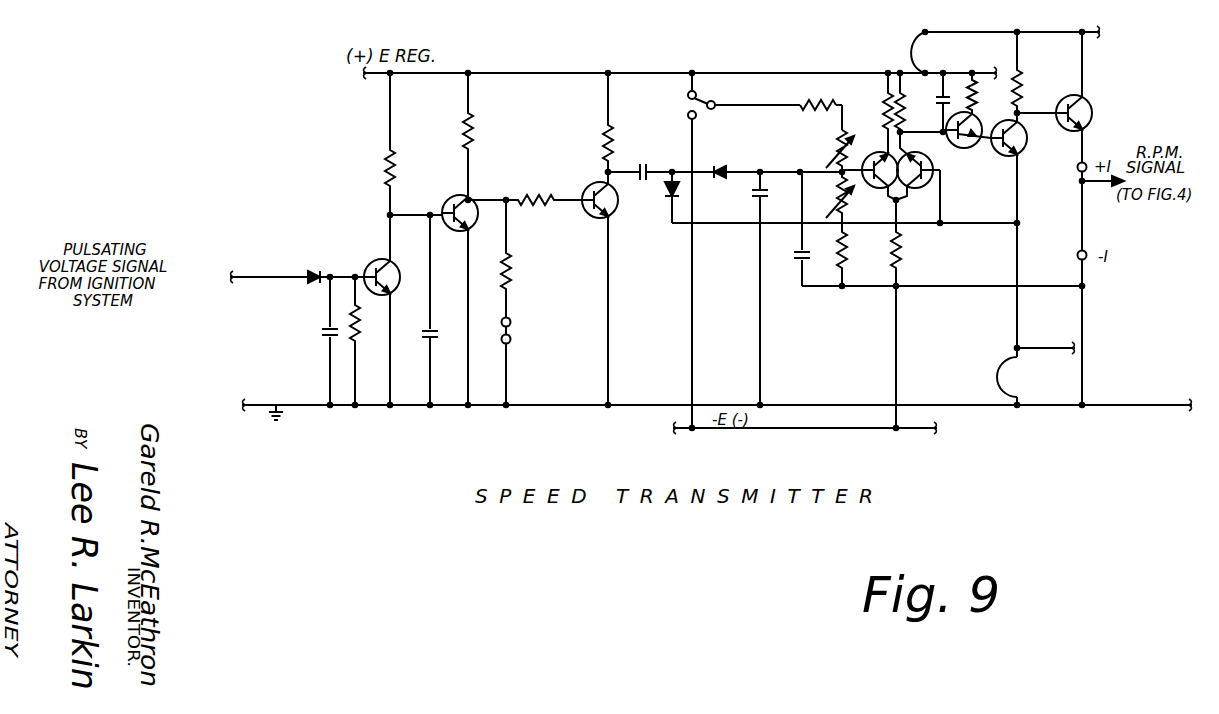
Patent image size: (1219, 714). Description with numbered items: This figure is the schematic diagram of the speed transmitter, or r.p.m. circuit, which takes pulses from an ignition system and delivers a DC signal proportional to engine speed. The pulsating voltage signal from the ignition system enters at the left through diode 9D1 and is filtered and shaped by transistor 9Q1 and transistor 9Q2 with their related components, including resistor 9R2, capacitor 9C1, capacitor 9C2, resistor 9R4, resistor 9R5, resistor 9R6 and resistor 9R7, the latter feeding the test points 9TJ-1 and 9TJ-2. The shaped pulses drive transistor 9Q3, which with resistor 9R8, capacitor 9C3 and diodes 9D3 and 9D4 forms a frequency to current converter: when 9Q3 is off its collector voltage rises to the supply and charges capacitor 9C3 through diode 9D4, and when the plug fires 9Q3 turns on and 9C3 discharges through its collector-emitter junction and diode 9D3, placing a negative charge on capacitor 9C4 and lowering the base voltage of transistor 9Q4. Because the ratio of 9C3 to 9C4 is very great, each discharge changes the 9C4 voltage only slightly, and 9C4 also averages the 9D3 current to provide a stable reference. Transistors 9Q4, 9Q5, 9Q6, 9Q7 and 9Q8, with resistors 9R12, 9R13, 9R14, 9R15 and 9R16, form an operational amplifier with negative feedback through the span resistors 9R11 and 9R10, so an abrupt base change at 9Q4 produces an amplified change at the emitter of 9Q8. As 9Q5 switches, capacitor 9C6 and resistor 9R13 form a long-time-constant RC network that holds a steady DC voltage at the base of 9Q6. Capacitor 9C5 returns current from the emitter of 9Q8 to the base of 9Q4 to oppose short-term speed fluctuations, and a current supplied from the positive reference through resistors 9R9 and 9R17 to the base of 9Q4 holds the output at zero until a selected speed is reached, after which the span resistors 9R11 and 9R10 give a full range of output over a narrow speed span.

The resistor 9R2 is at (366, 328).
The resistor 9R4 is at (396, 170).
The resistor 9R5 is at (476, 146).
The resistor 9R6 is at (556, 191).
The resistor 9R7 is at (509, 300).
The resistor 9R8 is at (612, 132).
The resistor 9R9 is at (836, 102).
The span resistor 9R10 is at (828, 197).
The span resistor 9R11 is at (860, 257).
The resistor 9R12 is at (882, 128).
The resistor 9R13 is at (917, 102).
The resistor 9R14 is at (902, 255).
The resistor 9R15 is at (976, 80).
The resistor 9R16 is at (1024, 98).
The resistor 9R17 is at (816, 151).
The capacitor 9C1 is at (320, 332).
The capacitor 9C2 is at (440, 332).
The capacitor 9C3 is at (650, 162).
The capacitor 9C4 is at (754, 196).
The capacitor 9C5 is at (794, 252).
The capacitor 9C6 is at (938, 102).
The diode 9D1 is at (314, 269).
The diode 9D3 is at (724, 160).
The diode 9D4 is at (664, 195).
The transistor 9Q1 is at (404, 290).
The transistor 9Q2 is at (482, 225).
The transistor 9Q3 is at (616, 218).
The transistor 9Q4 is at (876, 192).
The transistor 9Q5 is at (928, 192).
The transistor 9Q6 is at (958, 150).
The transistor 9Q7 is at (1042, 132).
The transistor 9Q8 is at (1104, 104).
The test jack terminal 9TJ-1 is at (525, 325).
The test jack terminal 9TJ-2 is at (525, 369).